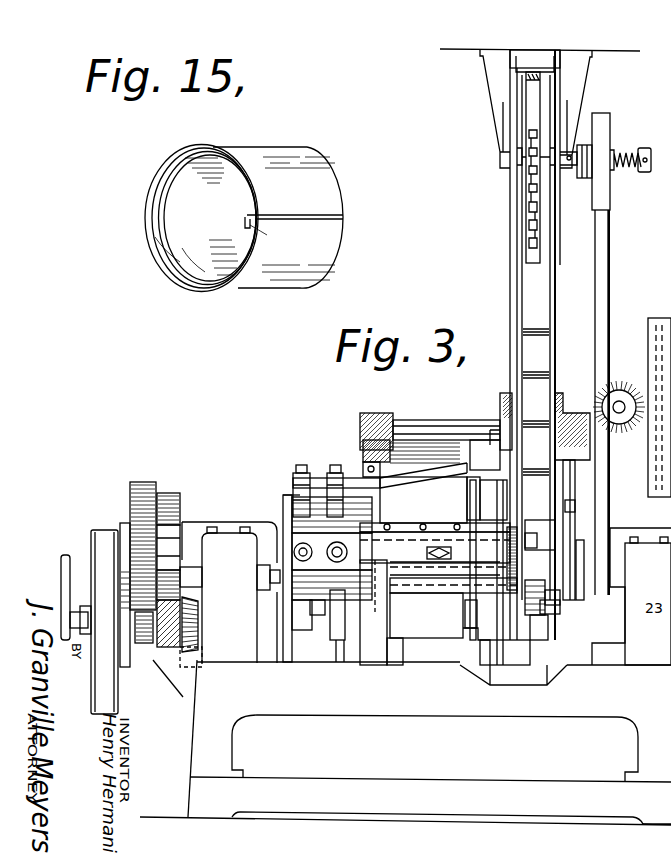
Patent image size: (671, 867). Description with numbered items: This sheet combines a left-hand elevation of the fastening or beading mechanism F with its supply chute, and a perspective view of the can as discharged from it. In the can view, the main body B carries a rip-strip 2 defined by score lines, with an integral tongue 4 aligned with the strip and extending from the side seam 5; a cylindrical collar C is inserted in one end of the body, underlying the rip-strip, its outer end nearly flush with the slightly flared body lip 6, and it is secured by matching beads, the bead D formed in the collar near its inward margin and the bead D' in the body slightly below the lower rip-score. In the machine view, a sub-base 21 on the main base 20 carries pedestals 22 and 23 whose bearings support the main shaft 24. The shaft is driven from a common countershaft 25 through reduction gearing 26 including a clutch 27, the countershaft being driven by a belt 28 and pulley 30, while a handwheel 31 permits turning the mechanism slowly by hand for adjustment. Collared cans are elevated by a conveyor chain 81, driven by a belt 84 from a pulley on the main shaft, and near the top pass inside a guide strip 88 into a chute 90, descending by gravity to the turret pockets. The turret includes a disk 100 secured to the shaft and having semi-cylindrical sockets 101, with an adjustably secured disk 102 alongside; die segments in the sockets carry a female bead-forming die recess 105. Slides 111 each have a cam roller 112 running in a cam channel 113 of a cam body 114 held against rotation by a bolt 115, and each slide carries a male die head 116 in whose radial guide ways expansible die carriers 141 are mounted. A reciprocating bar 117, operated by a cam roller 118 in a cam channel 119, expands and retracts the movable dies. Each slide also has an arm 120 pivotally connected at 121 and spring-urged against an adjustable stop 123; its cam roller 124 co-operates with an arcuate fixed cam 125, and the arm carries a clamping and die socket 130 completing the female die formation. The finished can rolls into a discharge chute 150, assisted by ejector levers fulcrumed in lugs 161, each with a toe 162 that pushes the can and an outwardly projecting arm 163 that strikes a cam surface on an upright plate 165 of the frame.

In FIG. 15, the rip-strip 2 is at (240, 168).
In FIG. 15, the integral tongue 4 is at (267, 235).
In FIG. 15, the side seam 5 is at (298, 215).
In FIG. 15, the body lip 6 is at (158, 158).
In FIG. 15, the main body B is at (278, 155).
In FIG. 3, the main body B is at (540, 358).
In FIG. 15, the cylindrical collar C is at (155, 237).
In FIG. 15, the bead D is at (178, 289).
In FIG. 15, the bead D' is at (208, 197).
In FIG. 3, the main base 20 is at (405, 793).
In FIG. 3, the sub-base 21 is at (480, 717).
In FIG. 3, the pedestal 22 is at (229, 595).
In FIG. 3, the pedestal 23 is at (631, 596).
In FIG. 3, the main shaft 24 is at (283, 540).
In FIG. 3, the common countershaft 25 is at (626, 390).
In FIG. 3, the reduction gearing 26 is at (133, 483).
In FIG. 3, the clutch 27 is at (145, 648).
In FIG. 3, the belt 28 is at (108, 708).
In FIG. 3, the pulley 30 is at (657, 320).
In FIG. 3, the handwheel 31 is at (62, 560).
In FIG. 3, the chain 81 is at (540, 242).
In FIG. 3, the belt 84 is at (601, 134).
In FIG. 3, the guide strip 88 is at (535, 92).
In FIG. 3, the chute 90 is at (527, 80).
In FIG. 3, the disk 100 is at (560, 470).
In FIG. 3, the semi-cylindrical sockets 101 is at (540, 627).
In FIG. 3, the disk 102 is at (523, 605).
In FIG. 3, the female bead-forming die recess 105 is at (503, 563).
In FIG. 3, the slides 111 is at (303, 600).
In FIG. 3, the cam roller 112 is at (297, 500).
In FIG. 3, the cam channel 113 is at (300, 535).
In FIG. 3, the cam body 114 is at (287, 607).
In FIG. 3, the bolt 115 is at (280, 640).
In FIG. 3, the male die head 116 is at (476, 497).
In FIG. 3, the reciprocating bar 117 is at (340, 590).
In FIG. 3, the cam roller 118 is at (340, 500).
In FIG. 3, the cam channel 119 is at (335, 526).
In FIG. 3, the arm 120 is at (402, 548).
In FIG. 3, the pivotal connection 121 is at (378, 510).
In FIG. 3, the adjustable stop 123 is at (445, 547).
In FIG. 3, the cam roller 124 is at (488, 433).
In FIG. 3, the arcuate fixed cam 125 is at (500, 677).
In FIG. 3, the clamping and die socket 130 is at (477, 563).
In FIG. 3, the expansible die carriers 141 is at (480, 440).
In FIG. 3, the discharge chute 150 is at (545, 607).
In FIG. 3, the lugs 161 is at (567, 520).
In FIG. 3, the toe 162 is at (540, 552).
In FIG. 3, the outwardly projecting arm 163 is at (575, 500).
In FIG. 3, the upright plate 165 is at (580, 540).
In FIG. 3, the fastening mechanism F is at (228, 612).